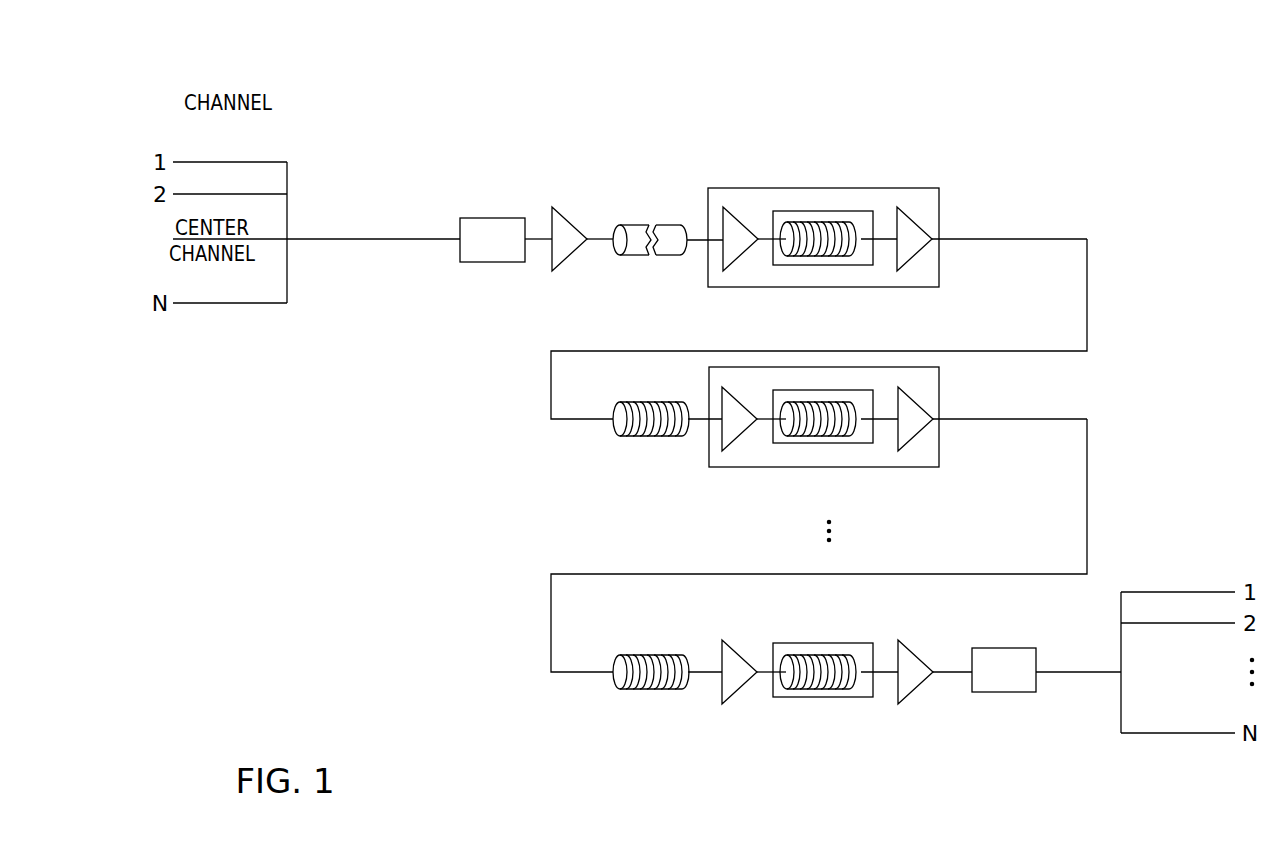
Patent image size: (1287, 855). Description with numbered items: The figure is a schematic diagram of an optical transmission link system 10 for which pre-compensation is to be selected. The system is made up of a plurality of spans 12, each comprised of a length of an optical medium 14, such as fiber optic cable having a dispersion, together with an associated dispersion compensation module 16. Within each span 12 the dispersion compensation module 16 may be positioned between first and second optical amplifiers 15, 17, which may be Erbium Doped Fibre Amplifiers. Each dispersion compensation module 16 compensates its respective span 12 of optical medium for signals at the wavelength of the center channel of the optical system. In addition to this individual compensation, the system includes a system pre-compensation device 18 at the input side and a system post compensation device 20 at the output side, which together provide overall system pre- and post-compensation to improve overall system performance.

The optical transmission link system 10 is at (914, 70).
The span 12 is at (897, 238).
The optical medium 14 is at (645, 280).
The first optical amplifier 15 is at (739, 215).
The dispersion compensation module 16 is at (788, 211).
The second optical amplifier 17 is at (912, 215).
The system pre-compensation device 18 is at (483, 262).
The system post compensation device 20 is at (1003, 692).